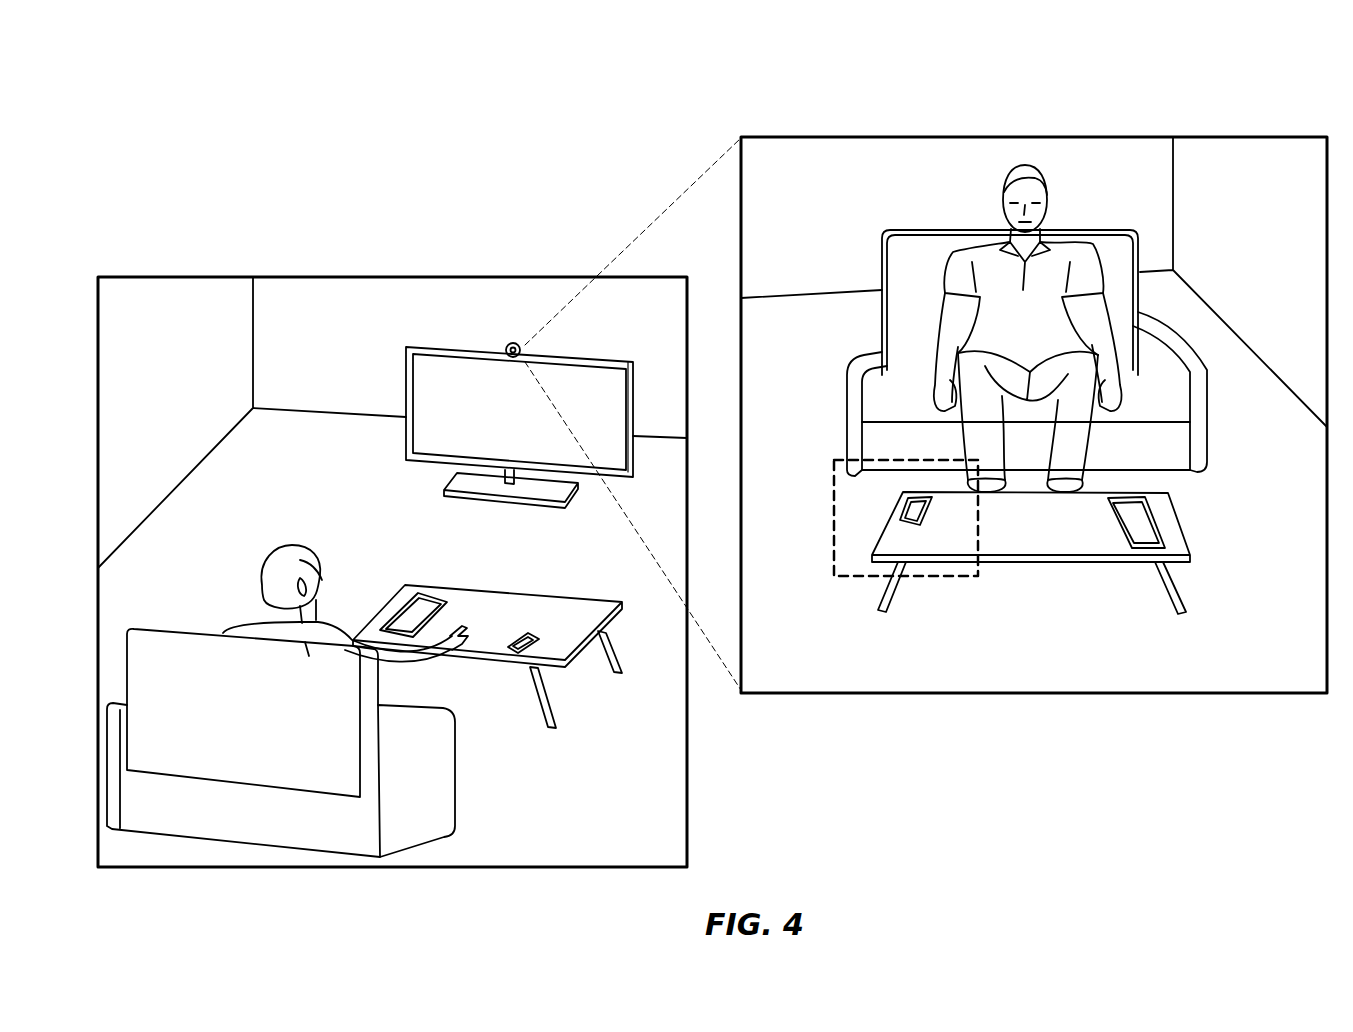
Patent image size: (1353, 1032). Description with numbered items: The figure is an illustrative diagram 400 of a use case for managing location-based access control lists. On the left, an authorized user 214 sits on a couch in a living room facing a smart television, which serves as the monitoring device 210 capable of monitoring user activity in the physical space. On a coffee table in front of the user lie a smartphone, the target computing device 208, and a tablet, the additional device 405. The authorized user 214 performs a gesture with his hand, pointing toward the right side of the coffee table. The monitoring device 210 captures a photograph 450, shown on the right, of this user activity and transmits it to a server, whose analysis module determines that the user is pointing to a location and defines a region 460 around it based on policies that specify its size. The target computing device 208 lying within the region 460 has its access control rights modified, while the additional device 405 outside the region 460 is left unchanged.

The illustrative diagram 400 is at (162, 90).
The photograph 450 is at (898, 108).
The monitoring device 210 is at (418, 386).
The authorized user 214 is at (998, 212).
The additional device 405 is at (1250, 572).
The target computing device 208 is at (531, 653).
The region 460 is at (958, 576).